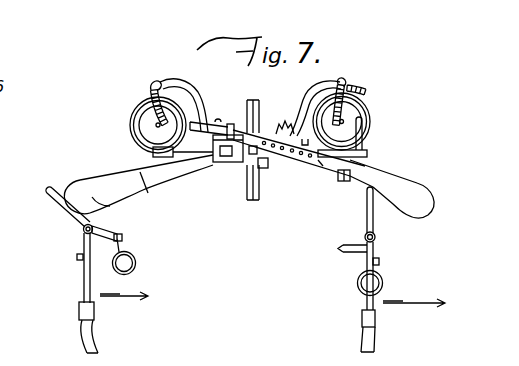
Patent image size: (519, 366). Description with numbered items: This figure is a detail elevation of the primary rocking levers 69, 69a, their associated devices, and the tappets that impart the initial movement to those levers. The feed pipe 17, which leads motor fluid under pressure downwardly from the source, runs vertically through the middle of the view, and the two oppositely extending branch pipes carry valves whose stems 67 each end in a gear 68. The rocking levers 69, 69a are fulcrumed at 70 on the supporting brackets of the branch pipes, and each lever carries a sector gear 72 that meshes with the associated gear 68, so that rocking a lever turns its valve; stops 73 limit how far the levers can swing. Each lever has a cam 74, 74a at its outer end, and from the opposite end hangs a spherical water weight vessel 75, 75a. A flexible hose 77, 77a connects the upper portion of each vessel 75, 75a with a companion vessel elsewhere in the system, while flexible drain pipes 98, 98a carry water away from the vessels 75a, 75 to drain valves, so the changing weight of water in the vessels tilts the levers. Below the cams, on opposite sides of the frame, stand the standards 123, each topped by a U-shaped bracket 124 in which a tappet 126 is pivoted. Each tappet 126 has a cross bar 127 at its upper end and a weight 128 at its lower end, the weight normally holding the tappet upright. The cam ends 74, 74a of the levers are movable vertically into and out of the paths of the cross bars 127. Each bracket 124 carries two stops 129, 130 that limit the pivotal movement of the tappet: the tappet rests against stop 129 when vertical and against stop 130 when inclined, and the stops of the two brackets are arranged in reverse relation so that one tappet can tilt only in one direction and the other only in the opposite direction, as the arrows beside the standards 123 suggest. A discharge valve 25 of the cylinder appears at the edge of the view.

The feed pipe 17 is at (260, 112).
The discharge valve 25 is at (8, 149).
The valve stem 67 is at (250, 158).
The gear 68 is at (262, 167).
The rocking lever 69 is at (148, 193).
The rocking lever 69a is at (366, 172).
The fulcrum 70 is at (333, 178).
The sector gear 72 is at (288, 151).
The stop 73 is at (218, 121).
The cam 74 is at (110, 202).
The cam 74a is at (412, 193).
The water weight vessel 75 is at (366, 110).
The water weight vessel 75a is at (159, 125).
The flexible hose 77 is at (366, 92).
The flexible hose 77a is at (166, 104).
The flexible drain pipe 98 is at (143, 150).
The flexible drain pipe 98a is at (292, 157).
The standard 123 is at (96, 337).
The U-shaped bracket 124 is at (17, 356).
The tappet 126 is at (65, 217).
The cross bar 127 is at (50, 197).
The weight 128 is at (136, 264).
The stop 129 is at (78, 258).
The stop 130 is at (121, 236).